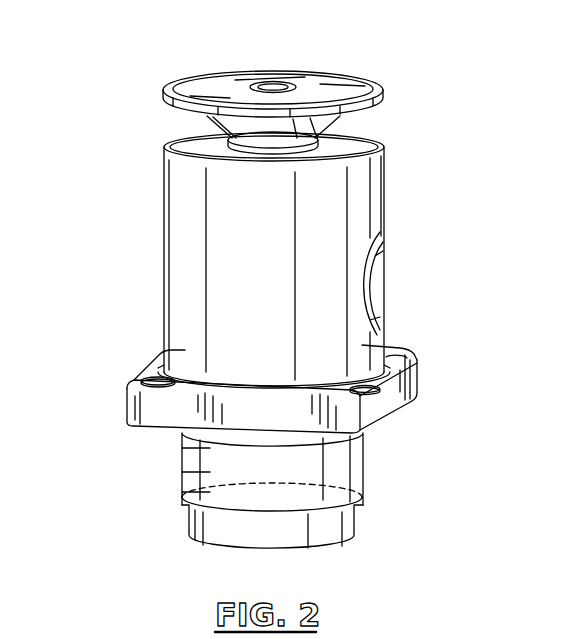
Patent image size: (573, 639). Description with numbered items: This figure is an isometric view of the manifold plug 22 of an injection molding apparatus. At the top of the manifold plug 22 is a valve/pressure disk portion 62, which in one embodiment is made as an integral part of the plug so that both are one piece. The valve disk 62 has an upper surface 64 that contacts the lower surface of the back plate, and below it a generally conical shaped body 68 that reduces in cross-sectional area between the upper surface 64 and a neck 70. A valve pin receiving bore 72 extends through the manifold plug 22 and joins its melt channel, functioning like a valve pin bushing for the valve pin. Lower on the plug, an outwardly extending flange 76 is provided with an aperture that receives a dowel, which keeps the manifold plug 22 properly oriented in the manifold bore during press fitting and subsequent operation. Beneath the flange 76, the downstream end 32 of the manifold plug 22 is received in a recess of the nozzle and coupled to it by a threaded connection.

The manifold plug 22 is at (184, 246).
The downstream end 32 is at (363, 468).
The valve/pressure disk portion 62 is at (295, 85).
The upper surface 64 is at (182, 84).
The generally conical shaped body 68 is at (213, 124).
The neck 70 is at (381, 137).
The valve pin receiving bore 72 is at (288, 80).
The outwardly extending flange 76 is at (417, 382).